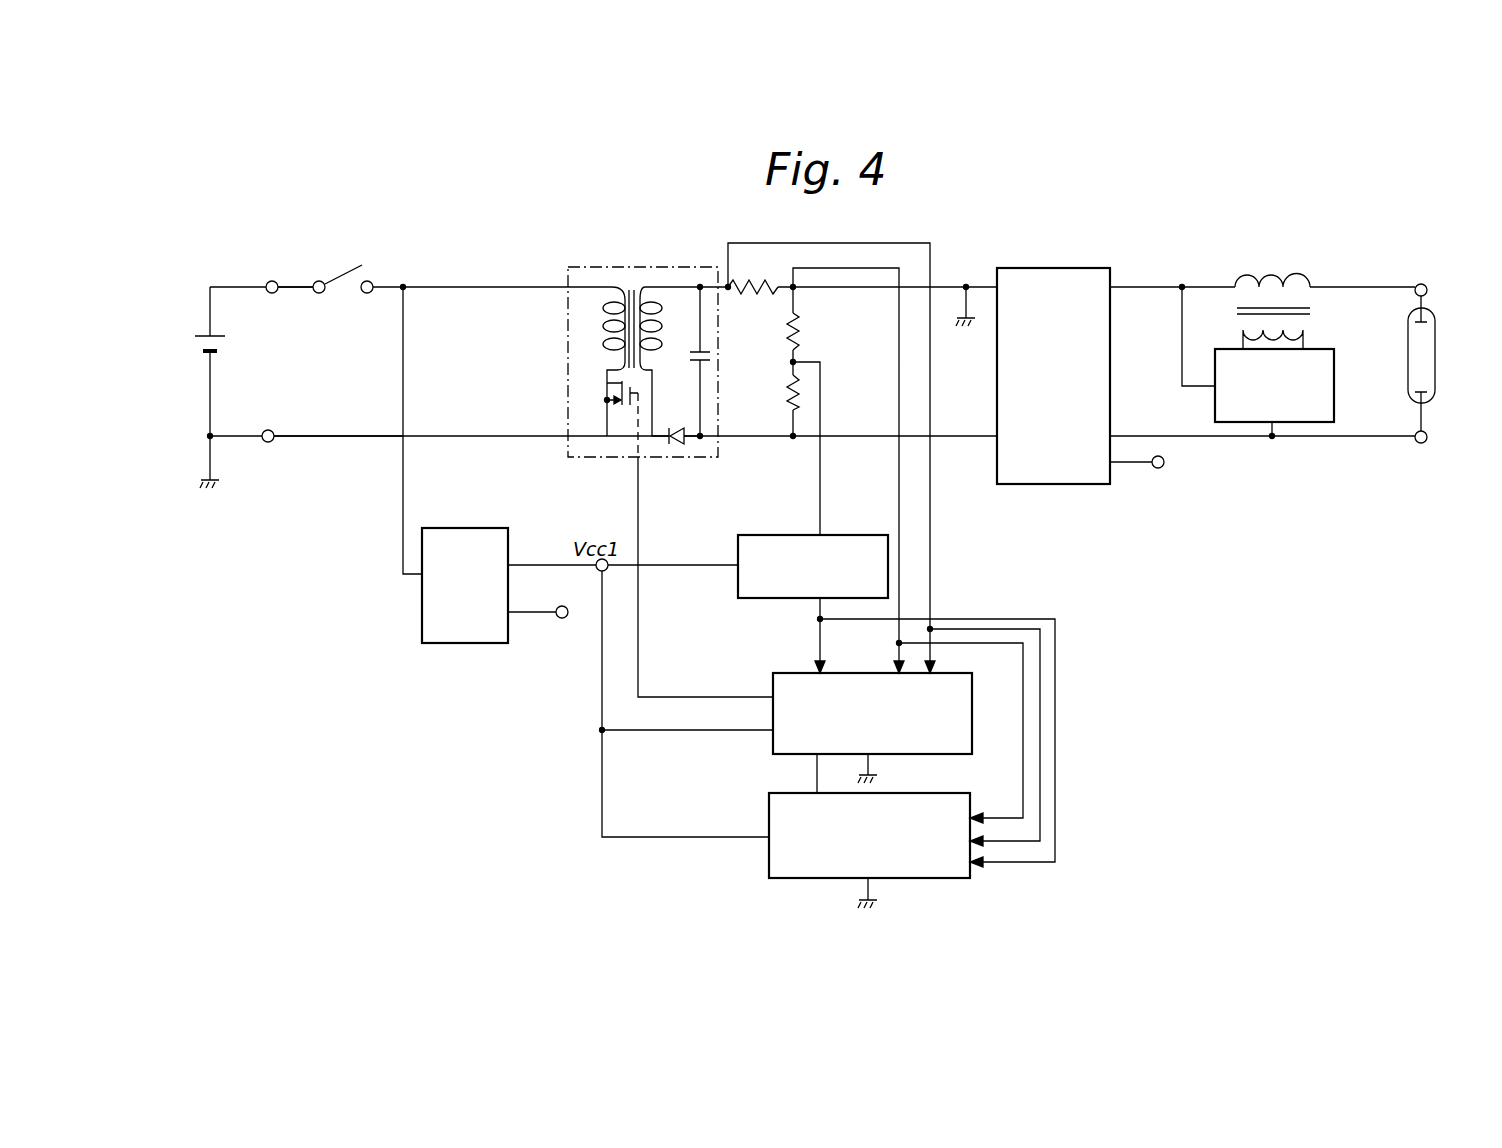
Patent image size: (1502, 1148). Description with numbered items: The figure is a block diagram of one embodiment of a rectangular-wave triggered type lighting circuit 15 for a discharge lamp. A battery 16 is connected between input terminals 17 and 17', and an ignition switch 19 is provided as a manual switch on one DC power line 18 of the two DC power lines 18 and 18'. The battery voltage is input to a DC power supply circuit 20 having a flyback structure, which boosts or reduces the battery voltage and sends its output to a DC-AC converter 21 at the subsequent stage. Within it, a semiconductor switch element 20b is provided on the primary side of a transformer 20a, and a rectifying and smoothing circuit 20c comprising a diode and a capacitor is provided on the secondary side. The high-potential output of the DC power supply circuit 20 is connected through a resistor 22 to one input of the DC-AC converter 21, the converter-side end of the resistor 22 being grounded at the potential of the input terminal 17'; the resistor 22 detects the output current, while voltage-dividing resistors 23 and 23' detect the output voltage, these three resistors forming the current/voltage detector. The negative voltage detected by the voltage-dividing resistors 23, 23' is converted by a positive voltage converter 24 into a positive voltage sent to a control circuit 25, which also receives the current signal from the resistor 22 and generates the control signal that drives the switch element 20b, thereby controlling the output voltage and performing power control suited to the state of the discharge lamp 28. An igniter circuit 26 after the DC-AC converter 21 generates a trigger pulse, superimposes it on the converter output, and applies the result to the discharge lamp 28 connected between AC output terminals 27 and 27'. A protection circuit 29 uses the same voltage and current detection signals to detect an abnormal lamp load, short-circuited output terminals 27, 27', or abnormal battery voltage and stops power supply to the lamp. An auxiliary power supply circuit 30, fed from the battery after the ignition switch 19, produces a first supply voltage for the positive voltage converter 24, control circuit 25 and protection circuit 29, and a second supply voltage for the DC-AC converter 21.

The lighting circuit 15 is at (418, 212).
The battery 16 is at (200, 332).
The input terminal 17 is at (266, 257).
The input terminal 17' is at (259, 462).
The DC power line 18 is at (290, 312).
The DC power line 18' is at (338, 465).
The ignition switch 19 is at (334, 280).
The DC power supply circuit 20 is at (650, 266).
The transformer 20a is at (631, 274).
The semiconductor switch element 20b is at (620, 400).
The rectifying and smoothing circuit 20c is at (689, 445).
The DC-AC converter 21 is at (1045, 268).
The resistor 22 is at (752, 297).
The voltage-dividing resistor 23 is at (827, 325).
The voltage-dividing resistor 23' is at (772, 400).
The positive voltage converter 24 is at (736, 584).
The control circuit 25 is at (948, 756).
The igniter circuit 26 is at (1298, 424).
The AC output terminal 27 is at (1429, 259).
The AC output terminal 27' is at (1409, 469).
The discharge lamp 28 is at (1436, 337).
The protection circuit 29 is at (948, 880).
The auxiliary power supply circuit 30 is at (450, 644).